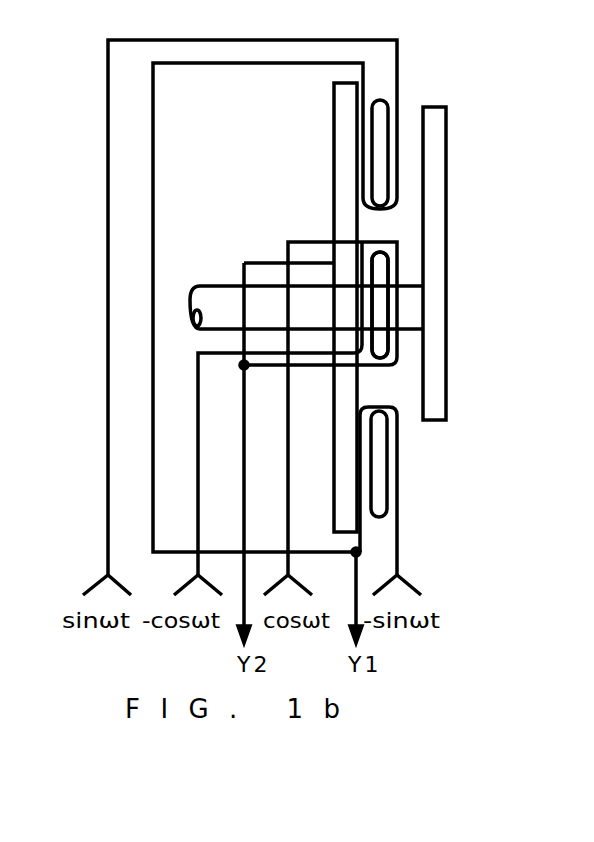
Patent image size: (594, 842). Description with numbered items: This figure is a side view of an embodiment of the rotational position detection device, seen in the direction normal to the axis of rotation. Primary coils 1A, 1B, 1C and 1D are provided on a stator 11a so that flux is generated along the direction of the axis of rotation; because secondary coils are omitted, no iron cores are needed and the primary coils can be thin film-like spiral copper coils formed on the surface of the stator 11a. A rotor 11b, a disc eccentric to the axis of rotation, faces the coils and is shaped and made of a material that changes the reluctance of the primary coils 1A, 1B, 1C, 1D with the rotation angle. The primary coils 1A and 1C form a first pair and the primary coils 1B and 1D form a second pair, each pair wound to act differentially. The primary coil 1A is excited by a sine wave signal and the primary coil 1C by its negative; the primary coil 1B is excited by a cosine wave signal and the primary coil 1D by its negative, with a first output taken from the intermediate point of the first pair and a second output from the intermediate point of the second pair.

The stator 11a is at (334, 128).
The rotor 11b is at (451, 107).
The primary coil 1A is at (400, 153).
The primary coil 1B is at (390, 306).
The primary coil 1D is at (467, 305).
The primary coil 1C is at (399, 464).